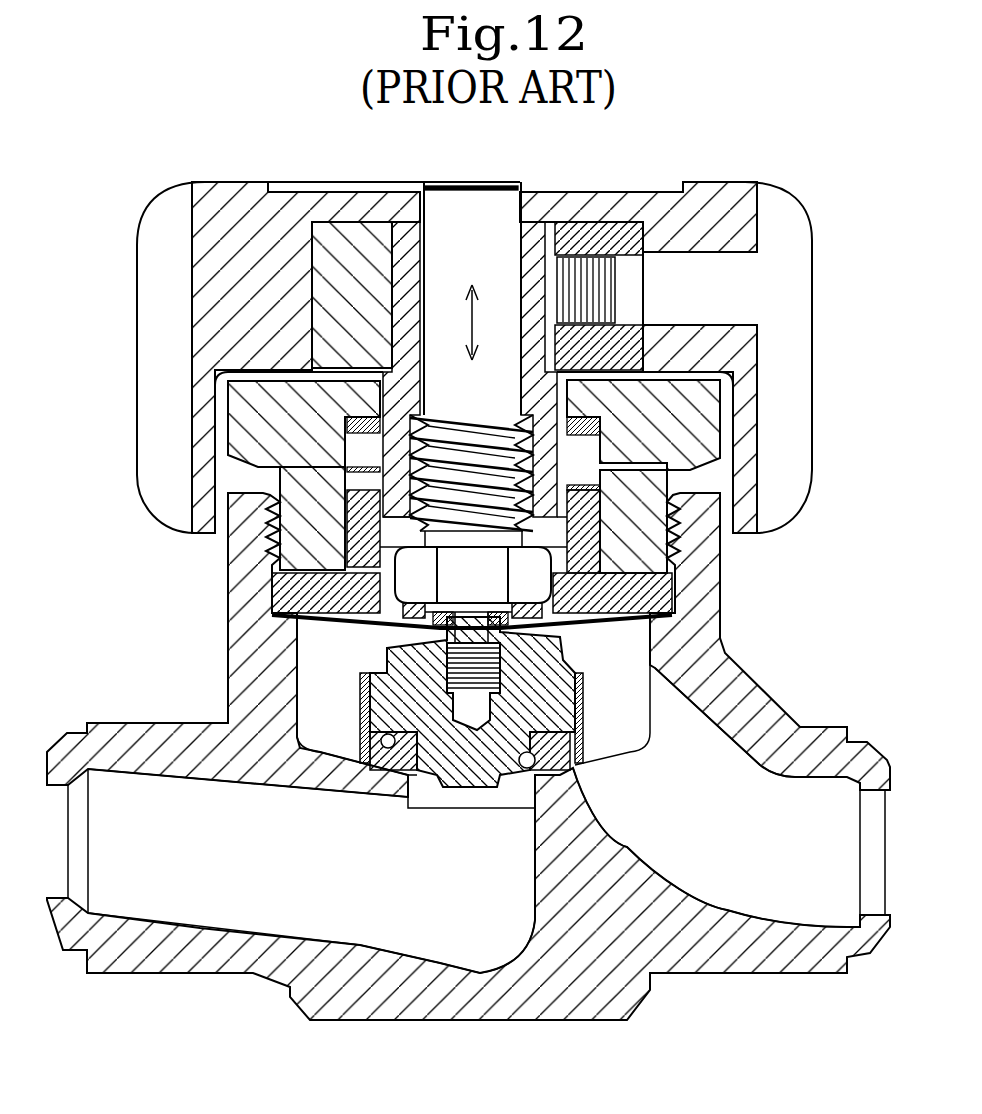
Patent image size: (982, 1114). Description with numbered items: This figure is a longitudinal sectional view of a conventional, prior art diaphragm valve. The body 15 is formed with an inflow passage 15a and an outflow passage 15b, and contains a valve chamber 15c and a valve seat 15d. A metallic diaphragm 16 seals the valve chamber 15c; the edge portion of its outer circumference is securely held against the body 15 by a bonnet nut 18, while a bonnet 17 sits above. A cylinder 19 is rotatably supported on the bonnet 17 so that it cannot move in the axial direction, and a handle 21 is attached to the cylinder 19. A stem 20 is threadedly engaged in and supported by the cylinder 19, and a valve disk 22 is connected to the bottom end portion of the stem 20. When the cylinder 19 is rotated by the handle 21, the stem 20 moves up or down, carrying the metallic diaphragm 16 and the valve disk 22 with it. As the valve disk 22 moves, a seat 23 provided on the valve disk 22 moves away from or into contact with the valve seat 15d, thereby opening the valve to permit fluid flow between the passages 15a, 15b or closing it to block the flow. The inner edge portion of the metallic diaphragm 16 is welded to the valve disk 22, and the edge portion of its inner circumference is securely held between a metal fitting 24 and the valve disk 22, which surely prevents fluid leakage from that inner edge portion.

The body 15 is at (443, 1036).
The inflow passage 15a is at (220, 867).
The outflow passage 15b is at (747, 847).
The valve chamber 15c is at (327, 697).
The valve seat 15d is at (515, 773).
The metallic diaphragm 16 is at (612, 627).
The bonnet 17 is at (647, 550).
The bonnet nut 18 is at (685, 440).
The cylinder 19 is at (408, 255).
The stem 20 is at (481, 215).
The handle 21 is at (707, 212).
The valve disk 22 is at (437, 773).
The seat 23 is at (385, 770).
The metal fitting 24 is at (377, 627).